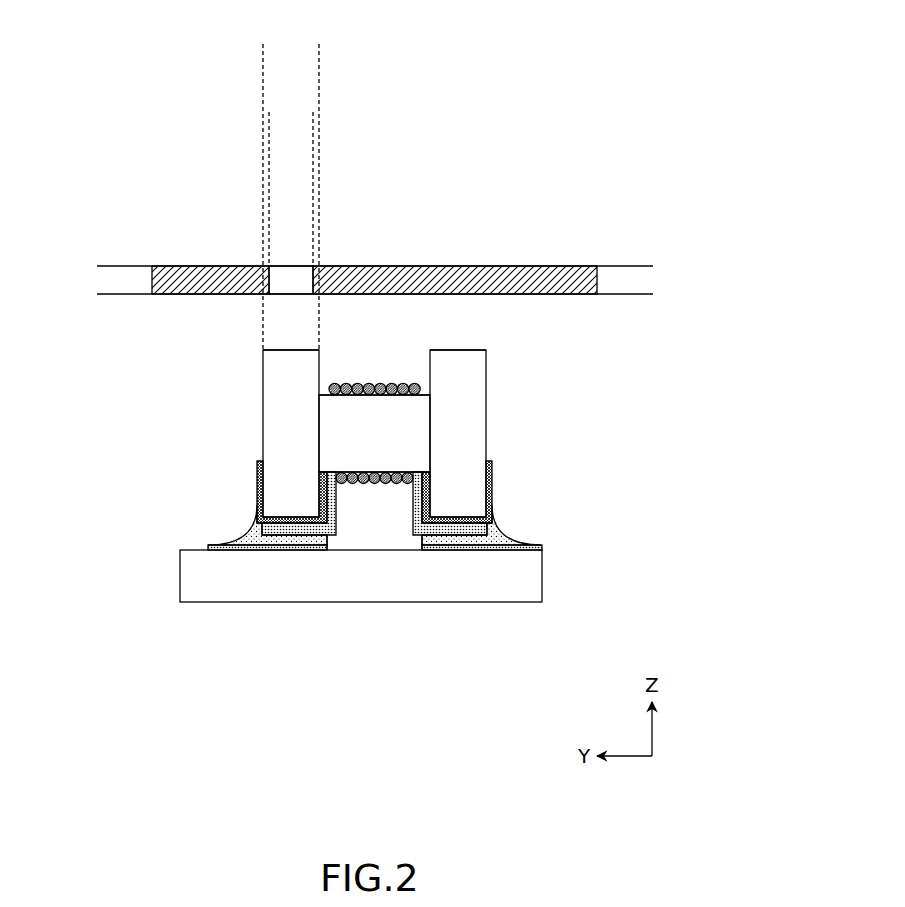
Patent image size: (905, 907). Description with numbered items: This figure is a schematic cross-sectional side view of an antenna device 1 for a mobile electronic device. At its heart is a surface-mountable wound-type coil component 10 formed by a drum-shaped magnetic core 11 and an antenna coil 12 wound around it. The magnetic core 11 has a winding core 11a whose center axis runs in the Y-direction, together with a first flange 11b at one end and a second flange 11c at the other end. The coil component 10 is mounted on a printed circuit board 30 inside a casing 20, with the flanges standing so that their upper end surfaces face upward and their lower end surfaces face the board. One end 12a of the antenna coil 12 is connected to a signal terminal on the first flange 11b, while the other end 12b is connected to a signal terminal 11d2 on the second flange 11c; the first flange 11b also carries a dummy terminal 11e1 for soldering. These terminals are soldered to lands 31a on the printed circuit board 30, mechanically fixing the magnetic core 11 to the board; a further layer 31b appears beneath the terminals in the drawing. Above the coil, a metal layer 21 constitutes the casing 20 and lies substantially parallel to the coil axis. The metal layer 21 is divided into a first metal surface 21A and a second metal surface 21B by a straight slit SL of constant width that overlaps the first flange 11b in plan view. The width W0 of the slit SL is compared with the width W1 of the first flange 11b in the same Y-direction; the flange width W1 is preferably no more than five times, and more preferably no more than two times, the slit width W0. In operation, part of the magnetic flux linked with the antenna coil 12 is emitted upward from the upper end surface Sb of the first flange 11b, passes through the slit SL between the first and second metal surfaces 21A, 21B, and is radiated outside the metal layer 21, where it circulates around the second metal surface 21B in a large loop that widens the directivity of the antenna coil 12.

The antenna device 1 is at (494, 143).
The coil component 10 is at (413, 695).
The magnetic core 11 is at (363, 453).
The winding core 11a is at (373, 420).
The first flange 11b is at (263, 378).
The second flange 11c is at (487, 378).
The signal terminal 11d2 is at (492, 490).
The dummy terminal 11e1 is at (257, 490).
The antenna coil 12 is at (373, 485).
The one end of the antenna coil 12a is at (325, 537).
The other end of the antenna coil 12b is at (420, 537).
The casing 20 is at (105, 283).
The metal layer 21 is at (374, 237).
The first metal surface 21A is at (263, 257).
The second metal surface 21B is at (597, 257).
The printed circuit board 30 is at (180, 573).
The lands 31a is at (207, 547).
The insulating region 31b is at (287, 548).
The slit SL is at (290, 277).
The upper end surface Sb is at (280, 345).
The width of the first flange W1 is at (319, 44).
The width of the slit W0 is at (313, 112).